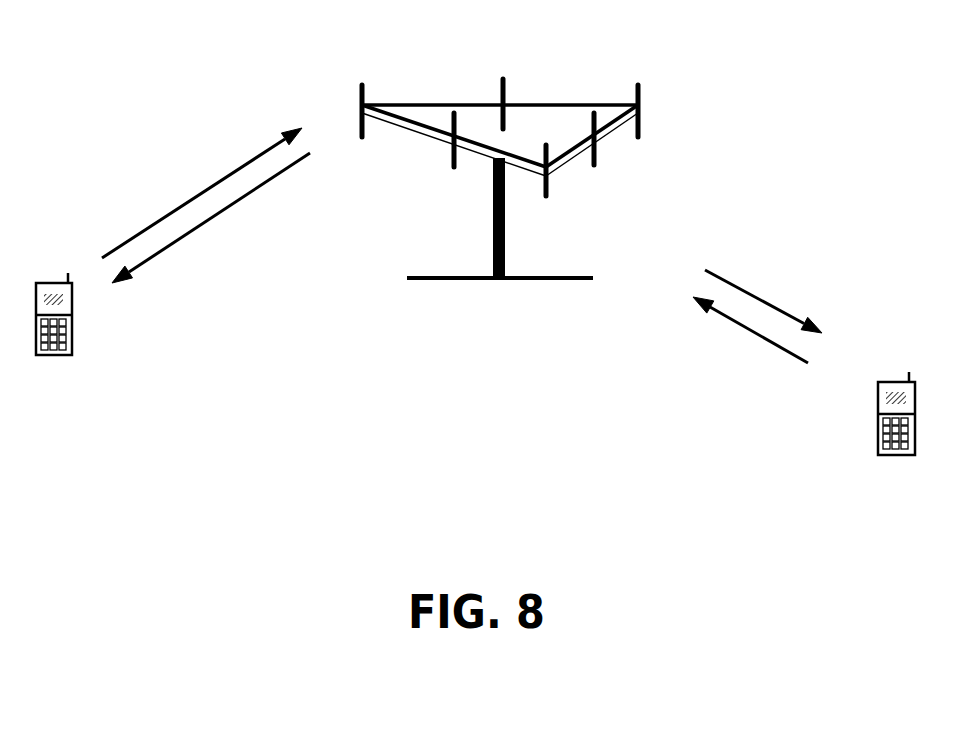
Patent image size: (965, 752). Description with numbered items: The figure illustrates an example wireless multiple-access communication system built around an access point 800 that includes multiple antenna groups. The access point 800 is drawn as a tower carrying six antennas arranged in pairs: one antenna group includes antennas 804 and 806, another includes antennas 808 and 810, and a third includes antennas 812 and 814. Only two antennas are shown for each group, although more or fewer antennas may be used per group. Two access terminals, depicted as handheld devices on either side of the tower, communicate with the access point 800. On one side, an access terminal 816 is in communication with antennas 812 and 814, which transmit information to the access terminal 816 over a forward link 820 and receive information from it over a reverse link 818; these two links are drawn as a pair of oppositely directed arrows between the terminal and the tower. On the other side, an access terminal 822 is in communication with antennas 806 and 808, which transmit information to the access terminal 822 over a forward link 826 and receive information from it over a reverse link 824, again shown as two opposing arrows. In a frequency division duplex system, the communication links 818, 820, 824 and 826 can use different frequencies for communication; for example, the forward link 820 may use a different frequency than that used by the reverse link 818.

The access point 800 is at (477, 280).
The antenna 804 is at (548, 182).
The antenna 806 is at (597, 152).
The antenna 808 is at (642, 123).
The antenna 810 is at (504, 87).
The antenna 812 is at (364, 91).
The antenna 814 is at (453, 153).
The access terminal 816 is at (53, 283).
The reverse link 818 is at (198, 195).
The forward link 820 is at (223, 208).
The access terminal 822 is at (893, 382).
The reverse link 824 is at (768, 340).
The forward link 826 is at (742, 288).